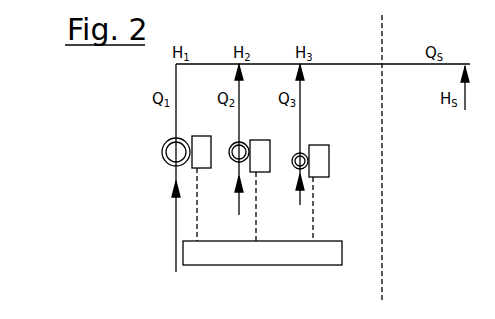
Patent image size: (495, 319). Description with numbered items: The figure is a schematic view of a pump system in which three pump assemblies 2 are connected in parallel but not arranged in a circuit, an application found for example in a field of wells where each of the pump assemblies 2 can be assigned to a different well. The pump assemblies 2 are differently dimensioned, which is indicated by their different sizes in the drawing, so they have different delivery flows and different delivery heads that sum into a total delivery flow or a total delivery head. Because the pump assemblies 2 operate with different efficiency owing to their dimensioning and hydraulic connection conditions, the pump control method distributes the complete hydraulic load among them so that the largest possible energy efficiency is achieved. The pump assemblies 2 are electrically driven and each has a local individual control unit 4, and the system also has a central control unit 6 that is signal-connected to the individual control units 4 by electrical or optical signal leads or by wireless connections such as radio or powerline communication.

The pump assembly 2 is at (167, 163).
The individual control unit 4 is at (260, 188).
The central control unit 6 is at (262, 253).